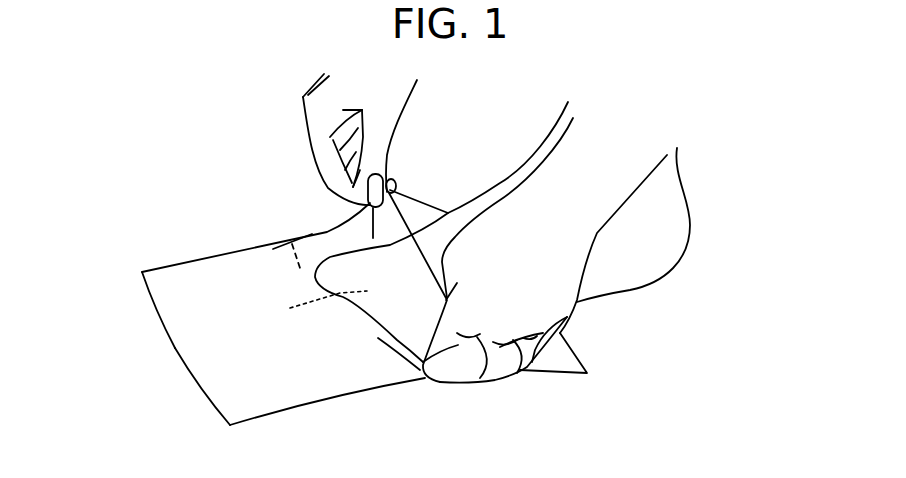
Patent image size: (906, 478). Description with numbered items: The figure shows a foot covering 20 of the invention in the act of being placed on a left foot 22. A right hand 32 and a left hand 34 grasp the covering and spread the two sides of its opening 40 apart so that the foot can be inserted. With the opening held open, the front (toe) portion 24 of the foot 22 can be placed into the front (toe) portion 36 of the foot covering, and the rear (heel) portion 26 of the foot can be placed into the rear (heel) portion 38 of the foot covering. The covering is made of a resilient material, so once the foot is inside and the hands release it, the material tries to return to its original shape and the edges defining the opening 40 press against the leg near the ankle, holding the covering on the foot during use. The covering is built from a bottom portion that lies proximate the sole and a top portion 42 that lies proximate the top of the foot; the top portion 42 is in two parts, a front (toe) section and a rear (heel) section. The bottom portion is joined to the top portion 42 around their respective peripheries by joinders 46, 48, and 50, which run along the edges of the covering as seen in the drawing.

The foot covering 20 is at (133, 202).
The left foot 22 is at (710, 285).
The front (toe) portion of the foot 24 is at (312, 307).
The rear (heel) portion of the foot 26 is at (667, 223).
The right hand 32 is at (357, 85).
The left hand 34 is at (547, 287).
The front (toe) portion of the foot covering 36 is at (178, 305).
The rear (heel) portion of the foot covering 38 is at (558, 360).
The opening 40 is at (418, 197).
The top portion 42 is at (242, 272).
The joinder 46 is at (343, 398).
The joinder 48 is at (178, 357).
The joinder 50 is at (577, 353).